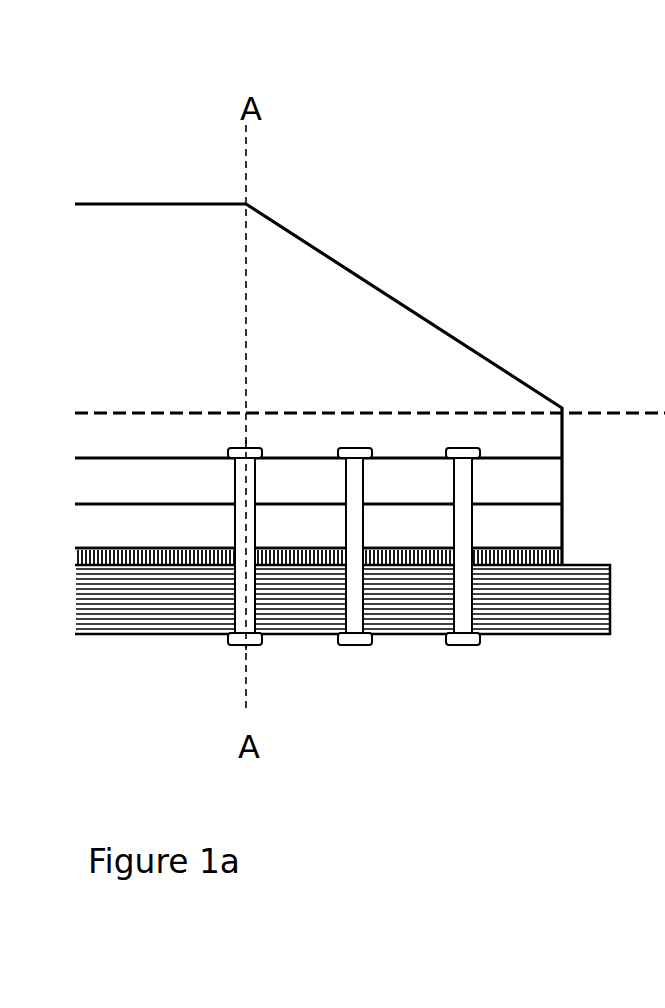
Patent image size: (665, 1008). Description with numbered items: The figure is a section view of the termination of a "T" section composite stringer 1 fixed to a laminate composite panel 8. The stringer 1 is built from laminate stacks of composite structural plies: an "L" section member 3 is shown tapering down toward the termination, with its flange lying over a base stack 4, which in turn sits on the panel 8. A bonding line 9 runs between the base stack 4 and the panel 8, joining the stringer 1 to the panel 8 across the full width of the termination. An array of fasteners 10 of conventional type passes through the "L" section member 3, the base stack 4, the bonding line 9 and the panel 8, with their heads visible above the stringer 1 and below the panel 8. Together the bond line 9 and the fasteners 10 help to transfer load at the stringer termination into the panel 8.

The composite stringer 1 is at (515, 158).
The "L" section member 3 is at (420, 355).
The base stack 4 is at (537, 528).
The laminate composite panel 8 is at (538, 610).
The bonding line 9 is at (565, 557).
The fasteners 10 is at (237, 634).